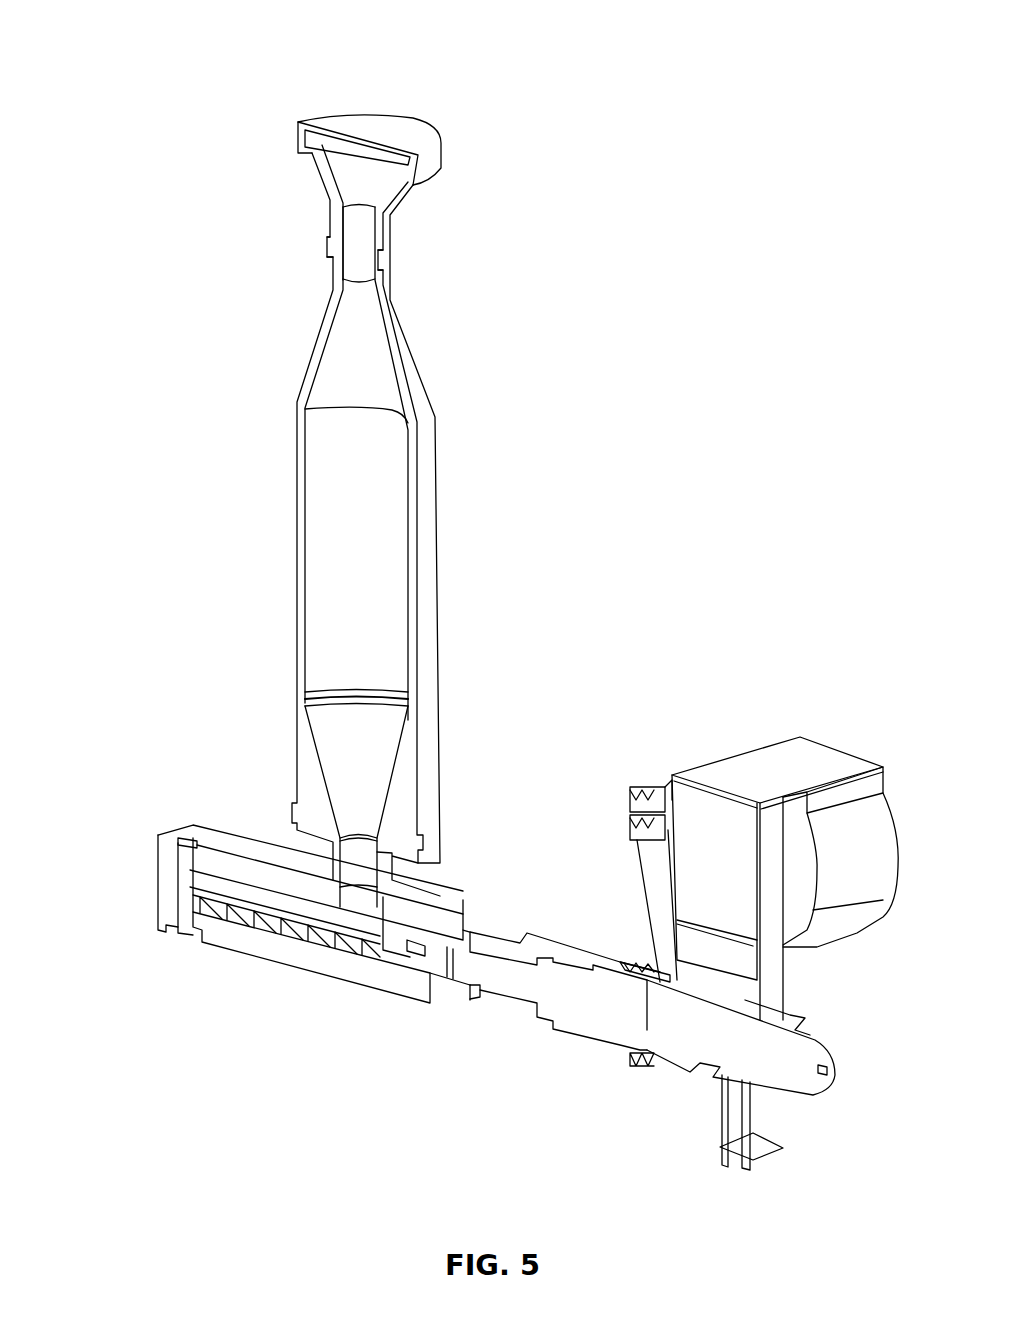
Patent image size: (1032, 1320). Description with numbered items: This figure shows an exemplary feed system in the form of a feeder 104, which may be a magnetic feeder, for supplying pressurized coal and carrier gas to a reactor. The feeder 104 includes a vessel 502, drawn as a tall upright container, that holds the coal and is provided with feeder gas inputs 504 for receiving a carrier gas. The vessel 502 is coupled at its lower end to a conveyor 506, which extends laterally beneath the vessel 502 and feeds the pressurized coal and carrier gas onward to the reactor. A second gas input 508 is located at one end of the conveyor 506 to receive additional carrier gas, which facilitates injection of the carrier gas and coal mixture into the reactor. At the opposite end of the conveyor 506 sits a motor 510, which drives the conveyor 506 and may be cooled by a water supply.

The feeder 104 is at (517, 92).
The vessel 502 is at (437, 553).
The feeder gas inputs 504 is at (333, 240).
The conveyor 506 is at (277, 960).
The second gas input 508 is at (183, 827).
The motor 510 is at (798, 777).